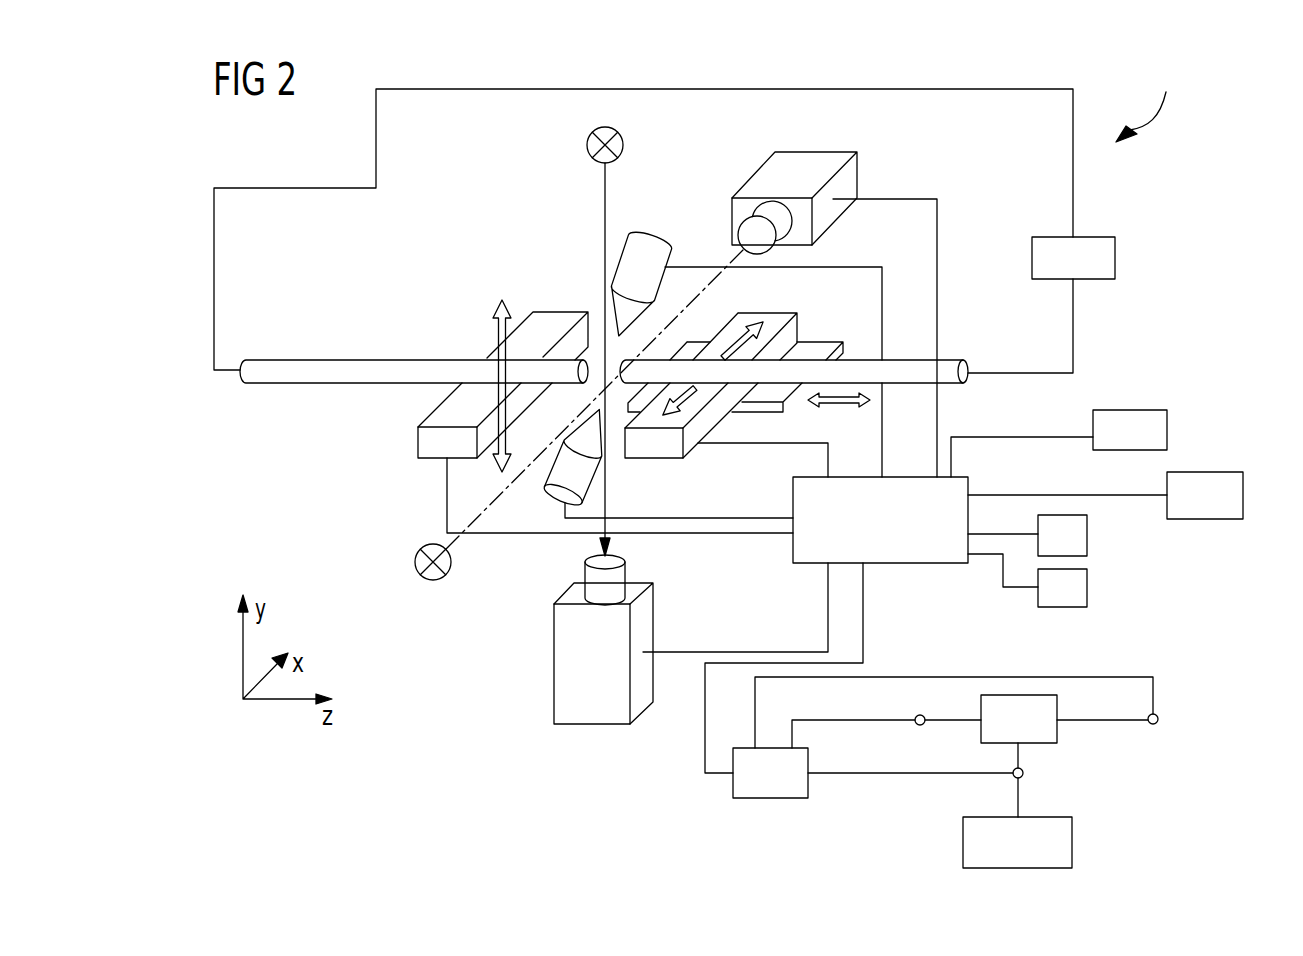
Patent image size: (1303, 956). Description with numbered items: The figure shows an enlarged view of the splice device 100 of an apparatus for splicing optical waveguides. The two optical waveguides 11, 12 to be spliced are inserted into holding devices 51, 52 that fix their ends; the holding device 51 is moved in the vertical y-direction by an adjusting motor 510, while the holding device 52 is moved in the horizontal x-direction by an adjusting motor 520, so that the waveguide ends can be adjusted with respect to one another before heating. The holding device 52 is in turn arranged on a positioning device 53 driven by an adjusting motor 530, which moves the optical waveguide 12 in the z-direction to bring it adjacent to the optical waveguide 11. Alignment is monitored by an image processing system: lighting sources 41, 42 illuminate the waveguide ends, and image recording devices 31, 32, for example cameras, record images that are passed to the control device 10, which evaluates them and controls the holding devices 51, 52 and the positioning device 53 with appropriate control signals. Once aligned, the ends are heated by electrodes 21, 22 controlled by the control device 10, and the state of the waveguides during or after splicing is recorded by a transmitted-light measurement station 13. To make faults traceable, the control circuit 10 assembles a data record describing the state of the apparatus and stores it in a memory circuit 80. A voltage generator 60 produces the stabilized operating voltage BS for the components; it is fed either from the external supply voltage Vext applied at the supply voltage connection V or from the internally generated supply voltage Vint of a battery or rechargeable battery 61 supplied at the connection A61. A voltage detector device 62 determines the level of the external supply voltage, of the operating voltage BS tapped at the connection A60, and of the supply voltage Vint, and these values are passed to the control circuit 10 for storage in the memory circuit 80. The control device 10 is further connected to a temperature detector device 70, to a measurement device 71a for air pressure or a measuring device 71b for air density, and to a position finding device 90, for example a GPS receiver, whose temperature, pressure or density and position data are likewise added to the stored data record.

The splice device 100 is at (1149, 102).
The control device 10 is at (917, 565).
The optical waveguide 11 is at (327, 360).
The optical waveguide 12 is at (903, 365).
The transmitted-light measurement station 13 is at (1115, 258).
The electrode 21 is at (651, 242).
The electrode 22 is at (553, 476).
The image recording device 31 is at (815, 160).
The image recording device 32 is at (592, 724).
The lighting source 41 is at (433, 580).
The lighting source 42 is at (587, 145).
The holding device 51 is at (418, 441).
The adjusting motor 510 is at (549, 318).
The holding device 52 is at (651, 447).
The adjusting motor 520 is at (813, 305).
The positioning device 53 is at (836, 342).
The adjusting motor 530 is at (780, 392).
The voltage generator 60 is at (1057, 725).
The rechargeable battery 61 is at (1072, 840).
The voltage detector device 62 is at (772, 798).
The temperature detector device 70 is at (1087, 535).
The measurement device for determining an air pressure 71a is at (1126, 588).
The measuring device for determining an air density 71b is at (1087, 590).
The memory circuit 80 is at (1130, 410).
The position finding device 90 is at (1203, 472).
The operating voltage BS is at (921, 701).
The terminal of switching unit A60 is at (924, 719).
The connection A61 is at (1023, 773).
The external supply voltage Vext is at (1177, 711).
The internally generated supply voltage Vint is at (995, 795).
The supply voltage connection V is at (1158, 722).